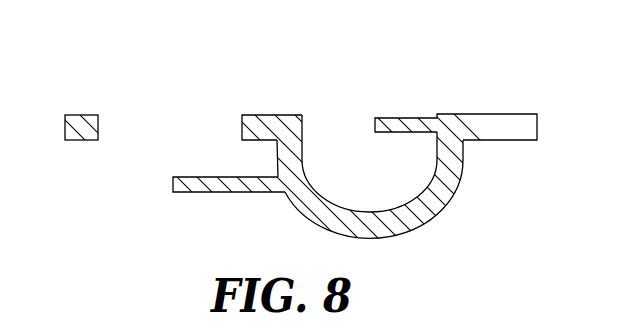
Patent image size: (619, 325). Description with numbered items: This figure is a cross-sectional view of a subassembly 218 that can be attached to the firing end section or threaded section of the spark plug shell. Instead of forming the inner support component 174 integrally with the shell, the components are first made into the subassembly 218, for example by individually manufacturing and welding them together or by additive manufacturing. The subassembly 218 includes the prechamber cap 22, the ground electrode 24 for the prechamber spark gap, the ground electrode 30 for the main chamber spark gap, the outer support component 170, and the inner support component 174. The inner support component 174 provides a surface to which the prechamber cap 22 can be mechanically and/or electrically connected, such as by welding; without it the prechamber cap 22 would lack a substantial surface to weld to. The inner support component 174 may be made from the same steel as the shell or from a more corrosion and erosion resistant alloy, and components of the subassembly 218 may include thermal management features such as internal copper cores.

The prechamber cap 22 is at (452, 188).
The ground electrode 24 is at (408, 125).
The ground electrode 30 is at (209, 176).
The outer support component 170 is at (80, 141).
The inner support component 174 is at (262, 124).
The subassembly 218 is at (526, 40).